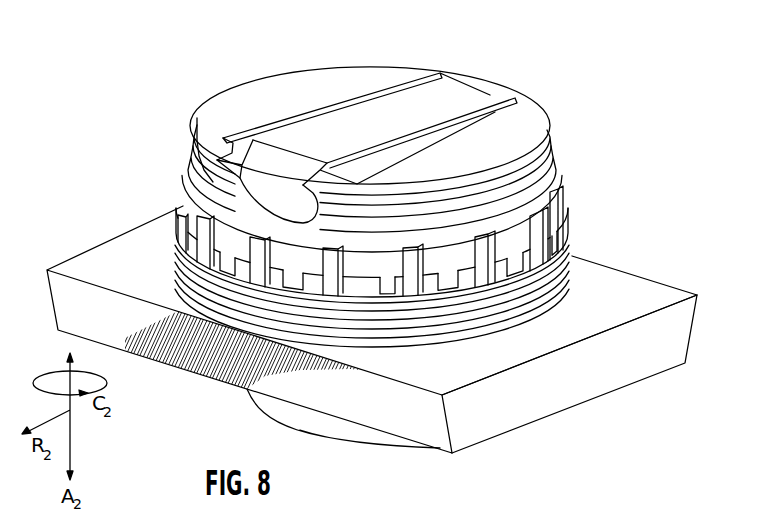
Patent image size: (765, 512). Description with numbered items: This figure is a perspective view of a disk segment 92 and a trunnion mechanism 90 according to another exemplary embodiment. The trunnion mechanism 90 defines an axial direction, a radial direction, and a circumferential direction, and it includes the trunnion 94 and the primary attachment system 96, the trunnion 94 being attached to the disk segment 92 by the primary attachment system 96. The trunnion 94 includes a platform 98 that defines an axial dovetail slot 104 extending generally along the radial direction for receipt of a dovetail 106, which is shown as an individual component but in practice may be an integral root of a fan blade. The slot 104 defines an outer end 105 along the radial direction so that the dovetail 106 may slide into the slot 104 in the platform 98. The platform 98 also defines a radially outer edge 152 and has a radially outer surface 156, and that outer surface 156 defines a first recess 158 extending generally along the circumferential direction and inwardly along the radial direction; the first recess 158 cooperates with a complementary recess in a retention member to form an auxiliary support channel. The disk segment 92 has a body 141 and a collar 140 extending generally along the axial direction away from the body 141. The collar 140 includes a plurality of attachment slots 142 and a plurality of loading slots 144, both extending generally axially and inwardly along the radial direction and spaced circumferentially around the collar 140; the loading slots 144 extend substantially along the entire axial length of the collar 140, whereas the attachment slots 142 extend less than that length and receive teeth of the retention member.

The trunnion mechanism 90 is at (537, 124).
The disk segment 92 is at (637, 290).
The trunnion 94 is at (548, 178).
The primary attachment system 96 is at (266, 401).
The platform 98 is at (258, 108).
The axial dovetail slot 104 is at (274, 165).
The outer end 105 is at (220, 193).
The dovetail 106 is at (428, 88).
The collar 140 is at (557, 214).
The body 141 is at (647, 345).
The attachment slots 142 is at (509, 279).
The loading slots 144 is at (494, 293).
The outer edge 152 is at (494, 160).
The outer surface 156 is at (191, 136).
The first recess 158 is at (435, 210).